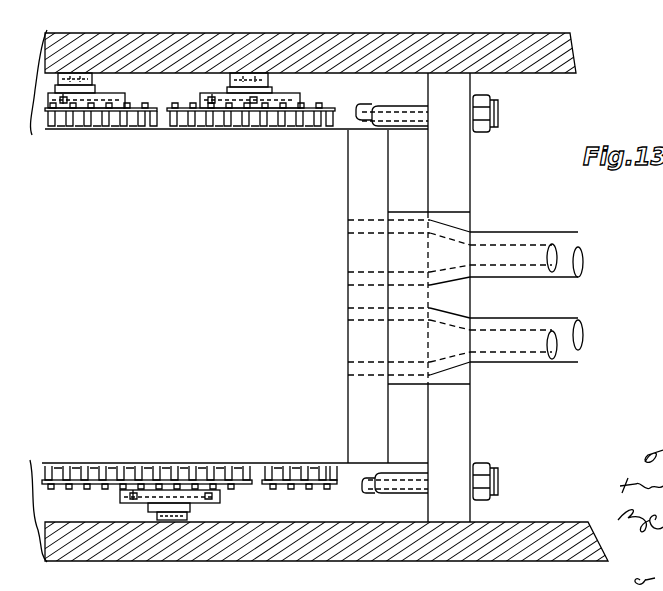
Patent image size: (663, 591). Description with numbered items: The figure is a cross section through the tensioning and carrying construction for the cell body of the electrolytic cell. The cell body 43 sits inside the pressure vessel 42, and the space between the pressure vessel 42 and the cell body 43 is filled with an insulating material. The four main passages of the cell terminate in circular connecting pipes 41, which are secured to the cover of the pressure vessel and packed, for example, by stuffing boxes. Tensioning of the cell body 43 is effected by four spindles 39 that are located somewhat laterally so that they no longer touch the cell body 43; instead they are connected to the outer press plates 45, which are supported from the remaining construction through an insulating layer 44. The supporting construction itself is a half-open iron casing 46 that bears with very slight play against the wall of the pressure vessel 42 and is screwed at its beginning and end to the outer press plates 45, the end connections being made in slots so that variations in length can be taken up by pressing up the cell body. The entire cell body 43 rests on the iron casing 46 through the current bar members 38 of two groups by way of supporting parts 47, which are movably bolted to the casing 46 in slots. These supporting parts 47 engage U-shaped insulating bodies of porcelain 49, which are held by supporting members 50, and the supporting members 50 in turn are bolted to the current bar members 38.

The current conducting band 38 is at (177, 118).
The spindle 39 is at (498, 117).
The connecting pipe 41 is at (565, 258).
The pressure vessel 42 is at (517, 54).
The cell body 43 is at (198, 274).
The insulating layer 44 is at (410, 183).
The outer press plate 45 is at (457, 152).
The iron casing 46 is at (409, 65).
The supporting part 47 is at (67, 77).
The insulating body of porcelain 49 is at (93, 90).
The supporting member 50 is at (105, 97).